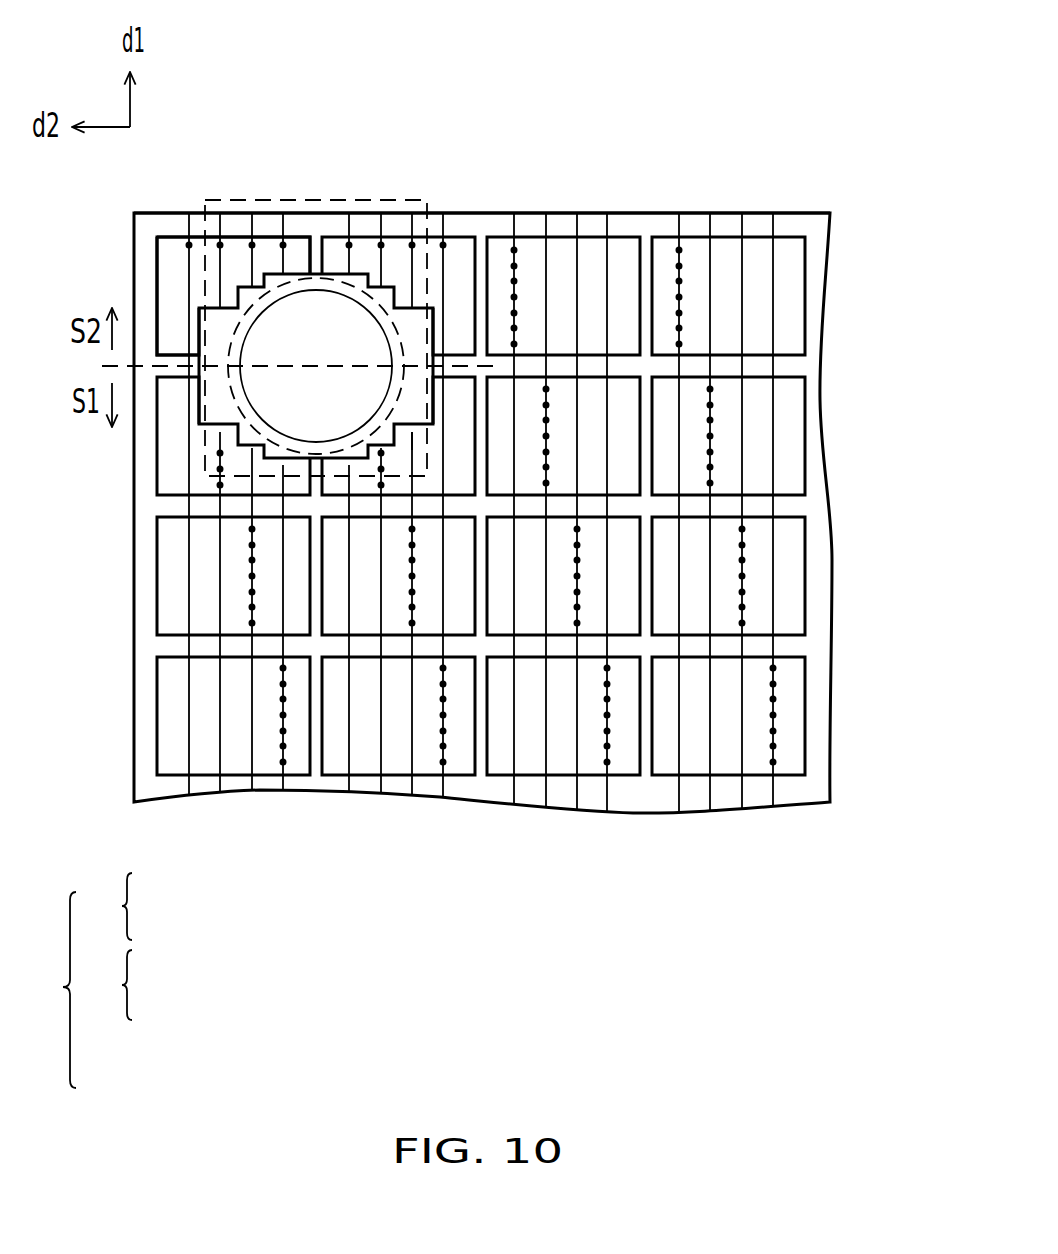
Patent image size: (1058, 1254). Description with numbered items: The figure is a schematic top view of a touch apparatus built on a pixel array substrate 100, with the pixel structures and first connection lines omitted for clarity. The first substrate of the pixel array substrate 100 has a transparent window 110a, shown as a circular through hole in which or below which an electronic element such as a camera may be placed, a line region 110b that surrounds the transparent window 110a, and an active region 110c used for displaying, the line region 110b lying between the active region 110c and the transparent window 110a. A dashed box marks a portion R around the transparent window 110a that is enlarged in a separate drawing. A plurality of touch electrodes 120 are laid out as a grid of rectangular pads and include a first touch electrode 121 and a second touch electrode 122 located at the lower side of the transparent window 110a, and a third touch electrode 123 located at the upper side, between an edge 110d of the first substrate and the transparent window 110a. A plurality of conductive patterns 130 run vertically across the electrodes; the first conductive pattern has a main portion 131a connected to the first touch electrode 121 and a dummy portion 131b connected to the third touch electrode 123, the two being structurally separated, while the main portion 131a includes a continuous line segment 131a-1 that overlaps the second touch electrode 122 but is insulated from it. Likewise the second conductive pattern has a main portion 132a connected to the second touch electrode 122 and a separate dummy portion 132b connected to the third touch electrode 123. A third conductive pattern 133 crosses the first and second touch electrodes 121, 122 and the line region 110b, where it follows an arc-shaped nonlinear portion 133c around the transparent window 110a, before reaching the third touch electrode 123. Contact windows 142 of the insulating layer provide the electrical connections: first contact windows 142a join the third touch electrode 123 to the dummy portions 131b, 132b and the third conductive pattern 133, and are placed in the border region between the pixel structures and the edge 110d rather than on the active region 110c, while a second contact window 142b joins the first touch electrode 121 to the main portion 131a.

The pixel array substrate 100 is at (910, 940).
The transparent window 110a is at (271, 313).
The line region 110b is at (275, 292).
The active region 110c is at (175, 290).
The edge 110d is at (238, 209).
The touch electrodes 120 is at (481, 500).
The first touch electrode 121 is at (476, 620).
The second touch electrode 122 is at (477, 398).
The third touch electrode 123 is at (477, 270).
The conductive patterns 130 is at (105, 981).
The main portion 131a is at (413, 783).
The continuous line segment 131a-1 is at (413, 460).
The dummy portion 131b is at (414, 268).
The main portion 132a is at (381, 783).
The dummy portion 132b is at (381, 260).
The third conductive pattern 133 is at (350, 783).
The nonlinear portion 133c is at (388, 335).
The contact windows 142 is at (496, 506).
The first contact windows 142a is at (415, 240).
The second contact window 142b is at (420, 527).
The portion R is at (210, 198).